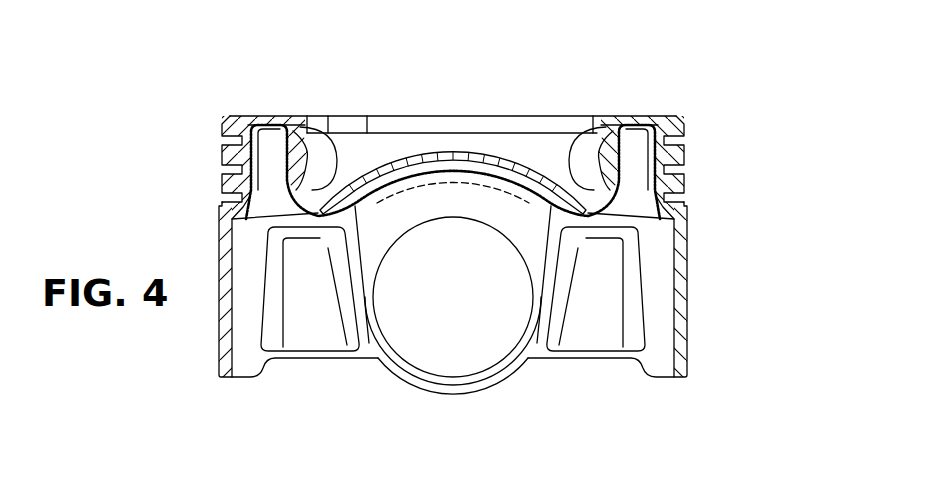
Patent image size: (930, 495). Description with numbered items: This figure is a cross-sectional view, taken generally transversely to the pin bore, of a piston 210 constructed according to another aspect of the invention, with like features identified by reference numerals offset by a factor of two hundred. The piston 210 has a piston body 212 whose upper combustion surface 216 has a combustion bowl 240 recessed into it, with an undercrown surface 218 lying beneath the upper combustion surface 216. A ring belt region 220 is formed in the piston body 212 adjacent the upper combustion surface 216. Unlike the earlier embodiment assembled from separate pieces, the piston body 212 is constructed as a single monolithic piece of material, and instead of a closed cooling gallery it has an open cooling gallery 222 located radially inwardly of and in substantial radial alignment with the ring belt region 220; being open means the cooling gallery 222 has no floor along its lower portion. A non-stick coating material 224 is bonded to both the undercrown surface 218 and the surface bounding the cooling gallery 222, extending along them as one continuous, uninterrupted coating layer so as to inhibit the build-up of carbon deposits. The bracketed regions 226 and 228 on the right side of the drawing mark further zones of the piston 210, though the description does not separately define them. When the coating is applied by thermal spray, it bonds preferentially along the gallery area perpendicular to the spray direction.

The piston 210 is at (718, 94).
The piston body 212 is at (667, 117).
The upper combustion surface 216 is at (237, 116).
The undercrown surface 218 is at (425, 168).
The ring belt region 220 is at (207, 115).
The cooling gallery 222 is at (637, 127).
The non-stick coating material 224 is at (260, 167).
The ring grooves 226 is at (701, 117).
The piston skirt 228 is at (701, 377).
The combustion bowl 240 is at (371, 161).